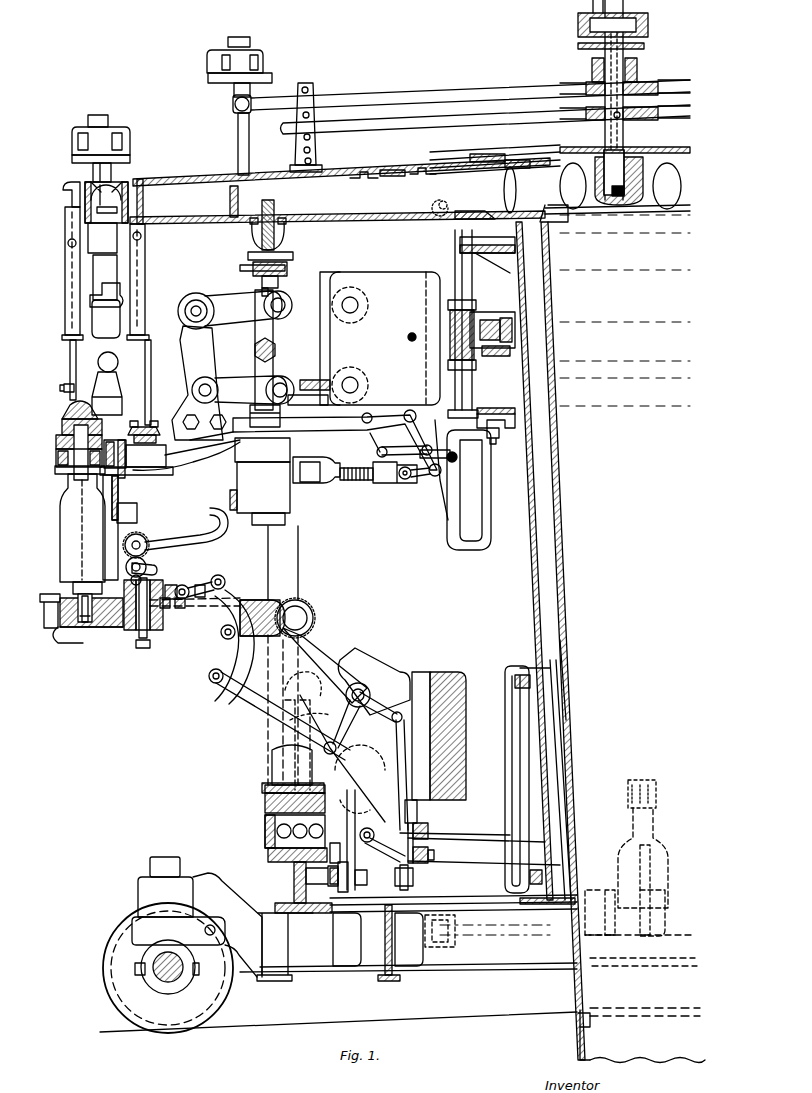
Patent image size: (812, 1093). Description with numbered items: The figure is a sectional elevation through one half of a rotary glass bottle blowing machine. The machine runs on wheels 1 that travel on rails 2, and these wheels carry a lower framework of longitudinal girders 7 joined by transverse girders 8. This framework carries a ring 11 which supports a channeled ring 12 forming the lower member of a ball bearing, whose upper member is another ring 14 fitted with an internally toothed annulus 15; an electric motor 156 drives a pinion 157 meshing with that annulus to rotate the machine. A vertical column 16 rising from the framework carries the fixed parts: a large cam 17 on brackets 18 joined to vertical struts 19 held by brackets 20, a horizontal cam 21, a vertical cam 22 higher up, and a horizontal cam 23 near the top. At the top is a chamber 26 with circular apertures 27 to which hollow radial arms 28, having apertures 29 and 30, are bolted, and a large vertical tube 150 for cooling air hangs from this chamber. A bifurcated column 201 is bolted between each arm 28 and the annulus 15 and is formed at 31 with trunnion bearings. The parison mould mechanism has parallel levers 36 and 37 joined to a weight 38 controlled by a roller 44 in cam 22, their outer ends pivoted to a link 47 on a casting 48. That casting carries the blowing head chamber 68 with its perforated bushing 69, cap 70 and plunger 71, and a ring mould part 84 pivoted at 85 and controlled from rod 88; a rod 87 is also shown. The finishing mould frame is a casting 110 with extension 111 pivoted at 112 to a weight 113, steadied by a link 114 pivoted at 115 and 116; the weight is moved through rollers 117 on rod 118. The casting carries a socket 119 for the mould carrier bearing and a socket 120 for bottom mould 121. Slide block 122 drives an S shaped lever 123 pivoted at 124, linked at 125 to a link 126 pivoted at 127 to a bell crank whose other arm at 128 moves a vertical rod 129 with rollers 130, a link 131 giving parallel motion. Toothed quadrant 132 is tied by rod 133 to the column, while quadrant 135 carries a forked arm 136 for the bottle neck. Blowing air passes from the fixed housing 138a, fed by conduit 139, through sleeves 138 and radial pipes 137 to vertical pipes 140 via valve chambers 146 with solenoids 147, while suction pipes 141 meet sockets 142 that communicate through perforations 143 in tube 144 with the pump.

The wheels 1 is at (105, 981).
The rails 2 is at (232, 1022).
The longitudinally disposed girders 7 is at (408, 933).
The transverse girders 8 is at (385, 940).
The ring 11 is at (294, 886).
The channeled ring 12 is at (270, 850).
The ring 14 is at (265, 826).
The internally toothed annulus 15 is at (265, 806).
The vertical column 16 is at (574, 818).
The large cam 17 is at (428, 858).
The brackets 18 is at (542, 489).
The vertical struts 19 is at (512, 818).
The brackets 20 is at (540, 670).
The horizontal cam 21 is at (488, 412).
The vertical cam 22 is at (480, 324).
The horizontal cam 23 is at (503, 256).
The chamber 26 is at (560, 179).
The circular aperture 27 is at (510, 190).
The hollow arm 28 is at (340, 191).
The aperture 29 is at (264, 216).
The aperture 30 is at (65, 230).
The trunnions 31 is at (305, 616).
The lever 36 is at (210, 298).
The lever 37 is at (222, 378).
The weight 38 is at (380, 338).
The roller 44 is at (485, 358).
The link 47 is at (186, 354).
The casting 48 is at (330, 426).
The chamber 68 is at (56, 472).
The bushing 69 is at (56, 458).
The cap 70 is at (58, 438).
The plunger 71 is at (70, 420).
The ring mould part 84 is at (327, 877).
The pivot 85 is at (128, 476).
The rod 87 is at (151, 404).
The rod 88 is at (156, 428).
The casting 110 is at (242, 598).
The extension 111 is at (326, 665).
The pivot 112 is at (365, 686).
The weight 113 is at (386, 702).
The link 114 is at (298, 750).
The pivot 115 is at (295, 726).
The pivot 116 is at (360, 817).
The rollers 117 is at (369, 828).
The rod 118 is at (403, 884).
The socket 119 is at (132, 644).
The socket 120 is at (90, 622).
The bottom mould 121 is at (76, 583).
The slide block 122 is at (190, 588).
The S shaped lever 123 is at (236, 656).
The pivot 124 is at (222, 636).
The pivot 125 is at (212, 682).
The link 126 is at (242, 690).
The pivot 127 is at (338, 748).
The pivot 128 is at (446, 692).
The vertical rod 129 is at (408, 760).
The rollers 130 is at (428, 828).
The link 131 is at (388, 856).
The toothed quadrant 132 is at (148, 572).
The rod 133 is at (178, 582).
The toothed quadrant 135 is at (140, 536).
The forked arm 136 is at (218, 533).
The radial pipes 137 is at (412, 94).
The sleeves 138 is at (592, 66).
The fixed air tight housing 138a is at (649, 20).
The conduit 139 is at (578, 47).
The vertical pipes 140 is at (238, 148).
The radial pipes 141 is at (462, 118).
The sockets 142 is at (625, 110).
The perforations 143 is at (622, 118).
The tube 144 is at (635, 70).
The valve chambers 146 is at (234, 108).
The solenoids 147 is at (262, 58).
The large vertical tube 150 is at (566, 668).
The electric motor 156 is at (424, 945).
The pinion 157 is at (632, 784).
The bifurcated column 201 is at (300, 567).